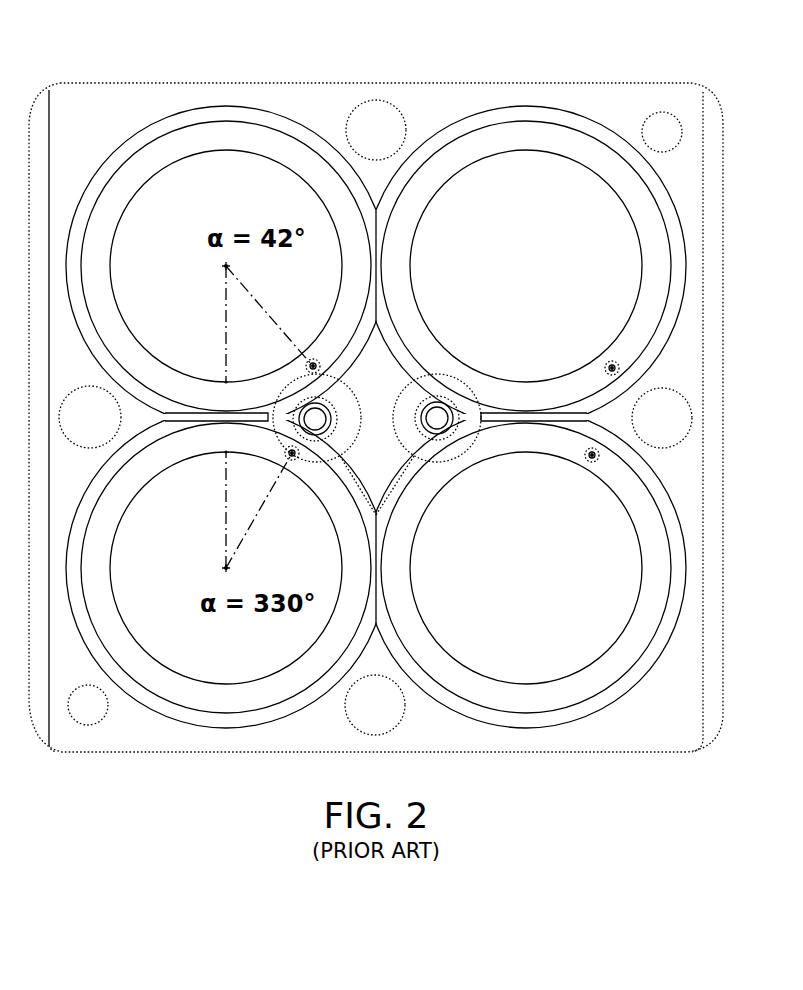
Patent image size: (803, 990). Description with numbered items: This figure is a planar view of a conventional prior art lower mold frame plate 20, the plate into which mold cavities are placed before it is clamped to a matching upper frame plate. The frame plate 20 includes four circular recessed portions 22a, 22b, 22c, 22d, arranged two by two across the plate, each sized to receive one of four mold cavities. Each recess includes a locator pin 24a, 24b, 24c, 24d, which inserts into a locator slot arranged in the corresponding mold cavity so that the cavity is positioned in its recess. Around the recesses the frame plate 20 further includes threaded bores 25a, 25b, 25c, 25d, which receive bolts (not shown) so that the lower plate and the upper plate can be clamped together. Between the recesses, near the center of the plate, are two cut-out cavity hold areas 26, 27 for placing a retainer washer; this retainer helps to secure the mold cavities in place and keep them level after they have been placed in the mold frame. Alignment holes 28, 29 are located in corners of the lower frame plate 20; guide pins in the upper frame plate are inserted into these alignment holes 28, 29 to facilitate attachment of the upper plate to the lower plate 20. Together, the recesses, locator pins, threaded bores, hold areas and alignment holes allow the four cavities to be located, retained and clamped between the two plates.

The lower mold frame plate 20 is at (648, 61).
The circular recessed portion 22a is at (581, 266).
The circular recessed portion 22b is at (581, 579).
The circular recessed portion 22c is at (174, 566).
The circular recessed portion 22d is at (174, 279).
The locator pin 24a is at (607, 363).
The locator pin 24b is at (587, 461).
The locator pin 24c is at (300, 454).
The locator pin 24d is at (321, 370).
The threaded bore 25a is at (398, 142).
The threaded bore 25b is at (684, 430).
The threaded bore 25c is at (396, 717).
The threaded bore 25d is at (111, 429).
The cut-out cavity hold area 26 is at (465, 428).
The cut-out cavity hold area 27 is at (286, 405).
The alignment hole 28 is at (676, 144).
The alignment hole 29 is at (102, 717).